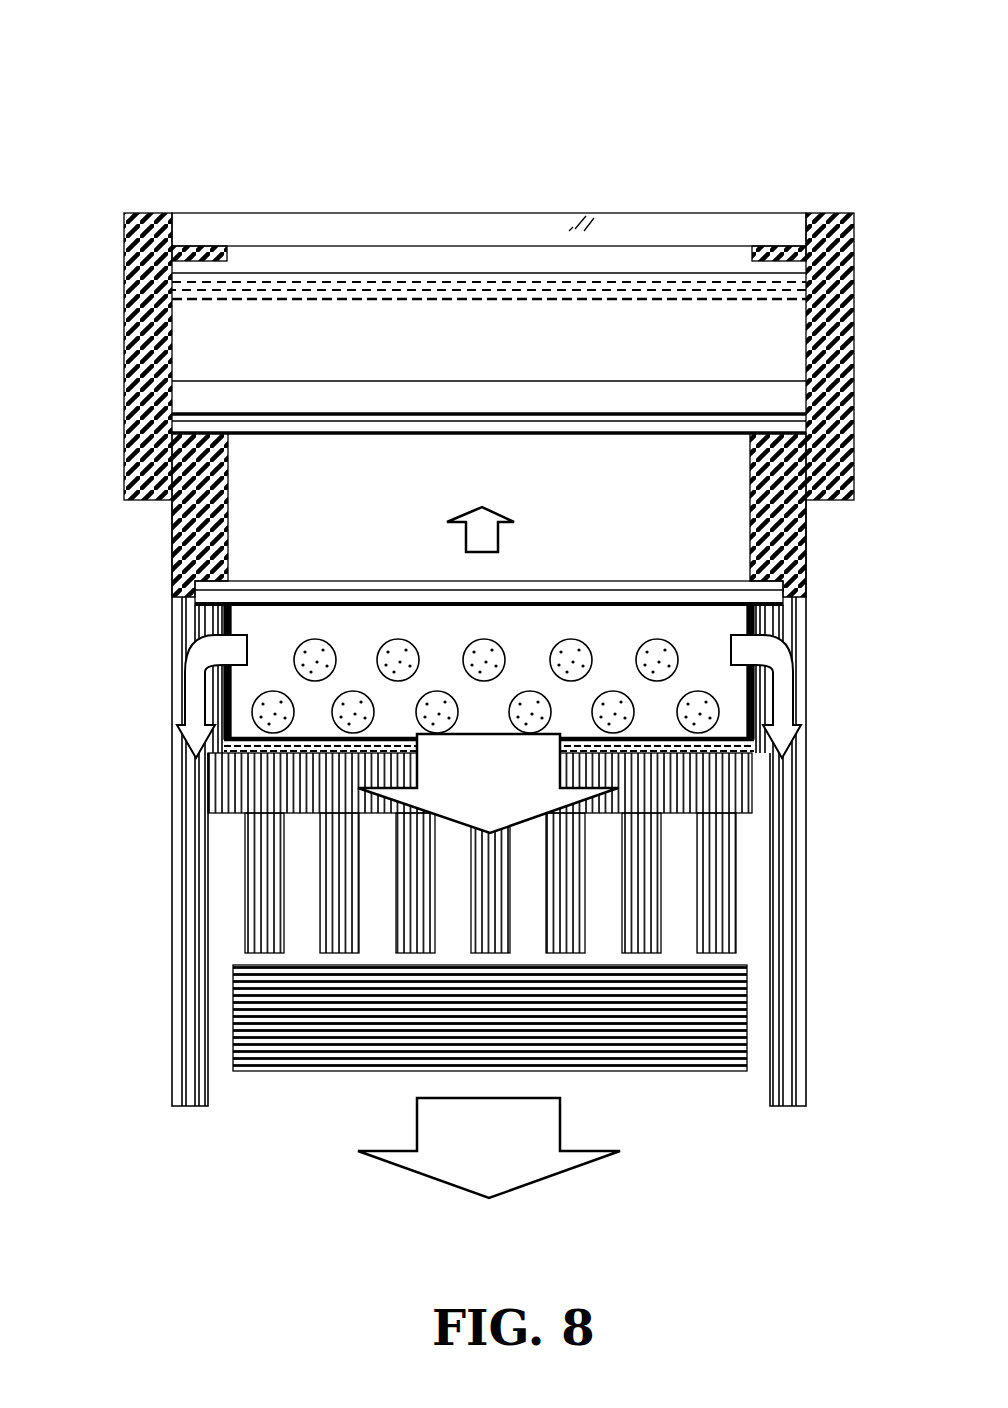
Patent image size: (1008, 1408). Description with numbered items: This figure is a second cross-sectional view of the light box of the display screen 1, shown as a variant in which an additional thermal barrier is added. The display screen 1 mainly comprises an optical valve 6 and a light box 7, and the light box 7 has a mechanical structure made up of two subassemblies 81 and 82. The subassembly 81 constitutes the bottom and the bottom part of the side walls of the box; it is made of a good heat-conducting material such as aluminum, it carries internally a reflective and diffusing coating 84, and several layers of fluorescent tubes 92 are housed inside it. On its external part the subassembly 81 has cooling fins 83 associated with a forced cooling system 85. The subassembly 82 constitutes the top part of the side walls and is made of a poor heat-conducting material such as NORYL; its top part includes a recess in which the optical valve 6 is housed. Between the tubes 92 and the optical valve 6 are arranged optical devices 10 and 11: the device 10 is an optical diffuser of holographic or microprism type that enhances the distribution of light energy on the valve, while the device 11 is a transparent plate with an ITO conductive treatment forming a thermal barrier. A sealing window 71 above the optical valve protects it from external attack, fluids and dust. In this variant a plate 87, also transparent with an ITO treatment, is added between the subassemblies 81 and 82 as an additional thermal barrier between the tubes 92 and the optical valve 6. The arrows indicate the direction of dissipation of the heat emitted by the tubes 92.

The display screen 1 is at (108, 65).
The optical valve 6 is at (190, 288).
The light box 7 is at (105, 712).
The optical diffuser 10 is at (188, 390).
The thermal barrier device 11 is at (147, 438).
The sealing window 71 is at (218, 228).
The subassembly 81 is at (190, 775).
The subassembly 82 is at (172, 543).
The cooling fins 83 is at (255, 875).
The reflective and diffusing coating 84 is at (563, 643).
The forced cooling system 85 is at (235, 995).
The plate 87 is at (217, 594).
The fluorescent tubes 92 is at (652, 643).